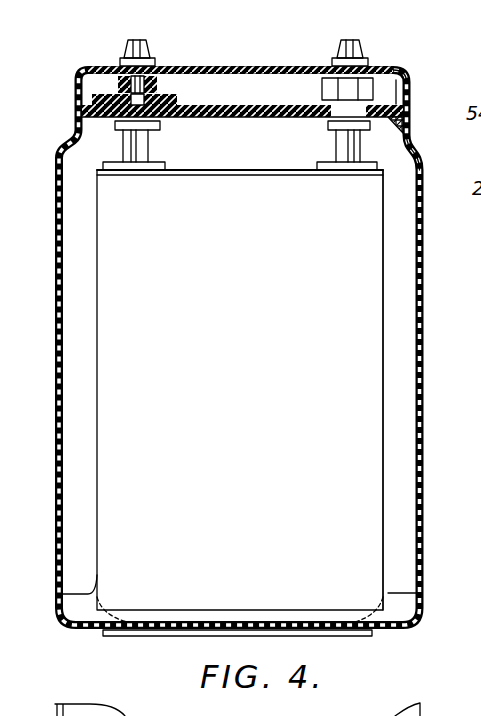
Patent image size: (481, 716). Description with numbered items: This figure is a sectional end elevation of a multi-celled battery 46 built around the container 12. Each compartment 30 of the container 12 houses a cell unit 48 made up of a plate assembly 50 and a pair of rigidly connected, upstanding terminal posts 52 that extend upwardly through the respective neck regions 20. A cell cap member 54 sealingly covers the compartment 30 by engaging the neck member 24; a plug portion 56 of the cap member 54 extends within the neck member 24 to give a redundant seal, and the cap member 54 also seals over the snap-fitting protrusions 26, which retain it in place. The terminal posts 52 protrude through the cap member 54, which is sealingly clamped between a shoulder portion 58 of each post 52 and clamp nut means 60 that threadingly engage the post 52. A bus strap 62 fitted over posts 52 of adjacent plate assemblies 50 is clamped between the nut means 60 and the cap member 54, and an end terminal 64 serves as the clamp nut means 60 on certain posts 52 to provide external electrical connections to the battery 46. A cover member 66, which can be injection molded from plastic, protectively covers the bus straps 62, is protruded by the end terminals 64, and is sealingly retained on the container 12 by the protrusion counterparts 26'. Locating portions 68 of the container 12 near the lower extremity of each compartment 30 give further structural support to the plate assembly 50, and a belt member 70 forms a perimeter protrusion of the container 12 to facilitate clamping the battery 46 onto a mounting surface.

The container 12 is at (424, 602).
The neck region 20 is at (256, 150).
The neck member 24 is at (410, 86).
The snap-fitting protrusion 26 is at (420, 102).
The protrusion counterpart 26' is at (437, 153).
The compartment 30 is at (413, 383).
The multi-celled battery 46 is at (414, 637).
The cell unit 48 is at (451, 400).
The plate assembly 50 is at (256, 405).
The terminal post 52 is at (150, 154).
The cell cap member 54 is at (229, 105).
The plug portion 56 is at (386, 127).
The shoulder portion 58 is at (160, 127).
The clamp nut means 60 is at (150, 91).
The bus strap 62 is at (180, 95).
The end terminal 64 is at (124, 48).
The cover member 66 is at (256, 66).
The locating portion 68 is at (97, 580).
The belt member 70 is at (426, 540).